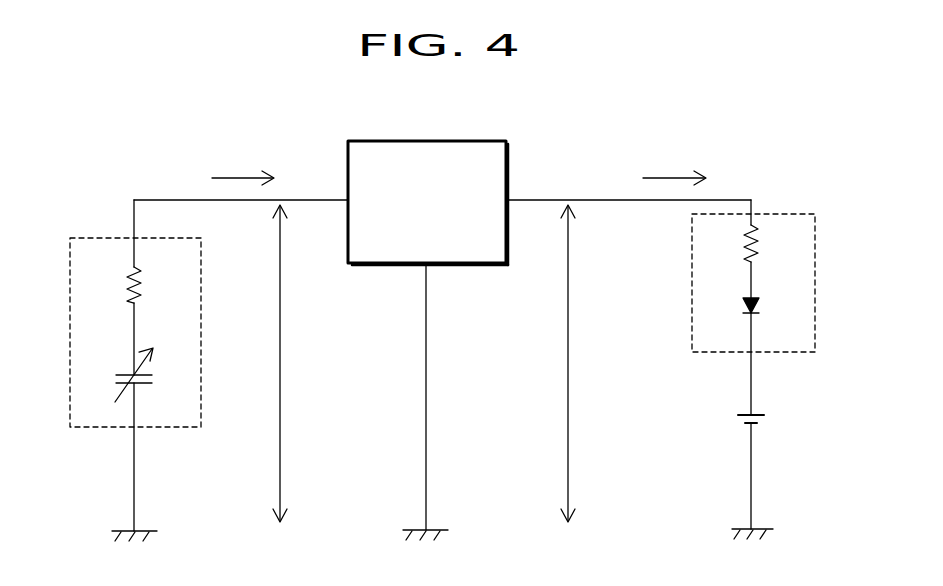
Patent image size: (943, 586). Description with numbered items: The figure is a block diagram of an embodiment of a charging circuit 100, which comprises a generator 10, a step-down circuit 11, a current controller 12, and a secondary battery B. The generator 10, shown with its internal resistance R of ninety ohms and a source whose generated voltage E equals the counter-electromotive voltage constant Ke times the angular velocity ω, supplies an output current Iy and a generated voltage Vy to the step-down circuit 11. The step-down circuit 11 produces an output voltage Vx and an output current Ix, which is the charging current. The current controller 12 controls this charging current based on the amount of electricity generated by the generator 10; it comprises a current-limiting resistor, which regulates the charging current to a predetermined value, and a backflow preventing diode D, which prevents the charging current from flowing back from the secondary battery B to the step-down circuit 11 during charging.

The charging circuit 100 is at (683, 65).
The generator 10 is at (202, 322).
The step-down circuit 11 is at (421, 140).
The current controller 12 is at (786, 214).